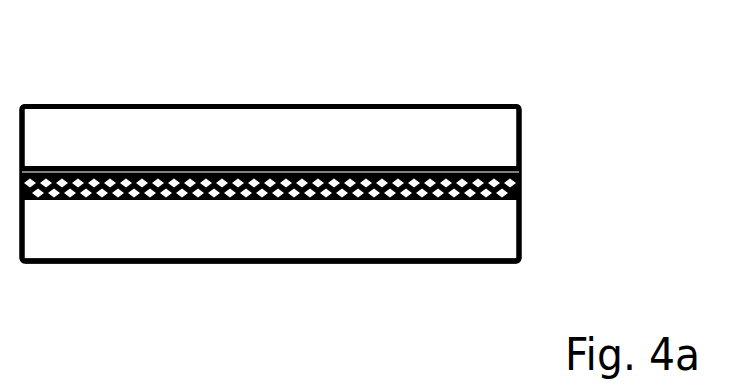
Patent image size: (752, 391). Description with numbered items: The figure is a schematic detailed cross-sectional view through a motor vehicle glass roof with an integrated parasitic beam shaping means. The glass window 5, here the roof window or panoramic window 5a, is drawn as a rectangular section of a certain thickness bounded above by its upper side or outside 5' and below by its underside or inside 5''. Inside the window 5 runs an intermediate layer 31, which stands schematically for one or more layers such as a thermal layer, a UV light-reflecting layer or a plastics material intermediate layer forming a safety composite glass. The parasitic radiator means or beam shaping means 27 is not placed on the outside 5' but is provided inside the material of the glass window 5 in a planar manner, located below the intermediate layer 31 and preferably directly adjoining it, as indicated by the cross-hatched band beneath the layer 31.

The glass window 5 is at (270, 131).
The roof window or panoramic window 5a is at (178, 52).
The upper side or outside of the glass window 5' is at (270, 72).
The underside or inside of the glass window 5'' is at (270, 303).
The intermediate layer 31 is at (463, 167).
The parasitic beam shaping means 27 is at (425, 186).